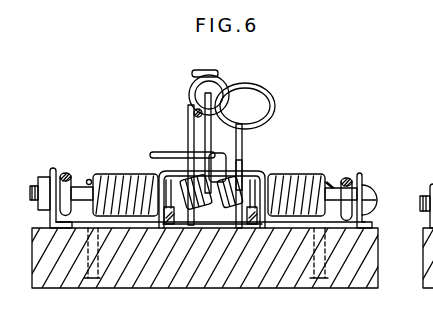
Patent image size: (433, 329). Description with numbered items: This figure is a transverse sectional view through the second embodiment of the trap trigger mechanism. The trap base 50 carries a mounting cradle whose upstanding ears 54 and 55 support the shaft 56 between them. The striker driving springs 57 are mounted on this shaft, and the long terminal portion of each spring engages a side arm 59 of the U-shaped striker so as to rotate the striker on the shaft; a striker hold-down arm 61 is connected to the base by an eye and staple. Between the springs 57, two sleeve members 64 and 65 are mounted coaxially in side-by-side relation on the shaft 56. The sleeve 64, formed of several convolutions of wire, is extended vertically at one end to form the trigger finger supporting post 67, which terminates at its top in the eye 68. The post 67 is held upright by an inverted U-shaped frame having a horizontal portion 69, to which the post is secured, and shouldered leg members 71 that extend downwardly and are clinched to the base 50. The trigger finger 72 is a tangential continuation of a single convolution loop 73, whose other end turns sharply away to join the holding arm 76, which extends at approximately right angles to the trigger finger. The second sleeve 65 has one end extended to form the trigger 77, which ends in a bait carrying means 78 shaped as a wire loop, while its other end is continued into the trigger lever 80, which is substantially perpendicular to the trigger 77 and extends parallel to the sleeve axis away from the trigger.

The trap base 50 is at (216, 273).
The upstanding ear 54 is at (51, 171).
The upstanding ear 55 is at (363, 180).
The shaft 56 is at (350, 173).
The striker driving spring 57 is at (102, 172).
The side arm 59 is at (65, 172).
The striker hold-down arm 61 is at (195, 114).
The sleeve member 64 is at (184, 212).
The sleeve member 65 is at (232, 208).
The trigger finger supporting post 67 is at (247, 131).
The eye 68 is at (217, 115).
The horizontal portion 69 is at (270, 177).
The shouldered leg member 71 is at (268, 230).
The trigger finger 72 is at (188, 134).
The single convolution loop 73 is at (225, 80).
The holding arm 76 is at (197, 71).
The trigger 77 is at (243, 164).
The bait carrying means 78 is at (265, 92).
The trigger lever 80 is at (152, 152).